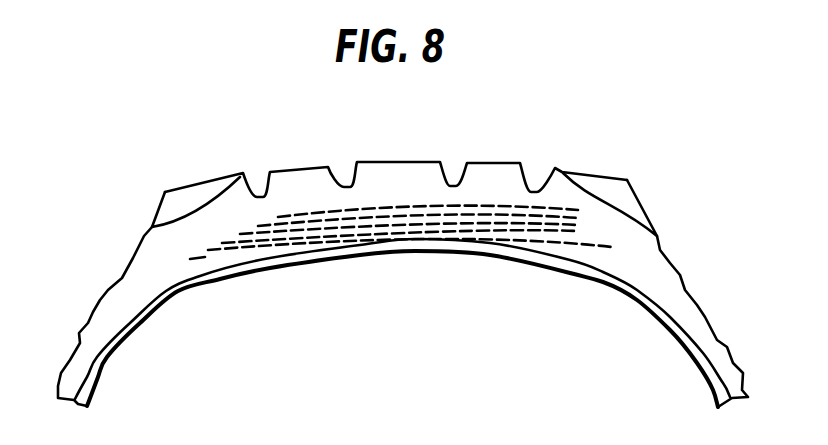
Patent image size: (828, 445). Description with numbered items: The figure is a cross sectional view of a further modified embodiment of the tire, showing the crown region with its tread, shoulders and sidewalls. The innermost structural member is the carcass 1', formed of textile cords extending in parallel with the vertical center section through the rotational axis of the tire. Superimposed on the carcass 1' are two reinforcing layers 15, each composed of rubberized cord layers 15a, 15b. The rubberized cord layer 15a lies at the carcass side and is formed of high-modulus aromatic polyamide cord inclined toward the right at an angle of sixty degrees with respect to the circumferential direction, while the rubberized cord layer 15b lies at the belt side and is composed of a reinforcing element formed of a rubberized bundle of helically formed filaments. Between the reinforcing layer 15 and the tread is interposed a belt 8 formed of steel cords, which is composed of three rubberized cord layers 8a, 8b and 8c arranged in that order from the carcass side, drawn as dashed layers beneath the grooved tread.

The carcass 1' is at (402, 323).
The belt 8 is at (440, 163).
The rubberized cord layer 8a is at (310, 228).
The rubberized cord layer 8b is at (300, 223).
The rubberized cord layer 8c is at (288, 214).
The reinforcing layer 15 is at (448, 249).
The rubberized cord layer 15a is at (212, 255).
The rubberized cord layer 15b is at (588, 238).